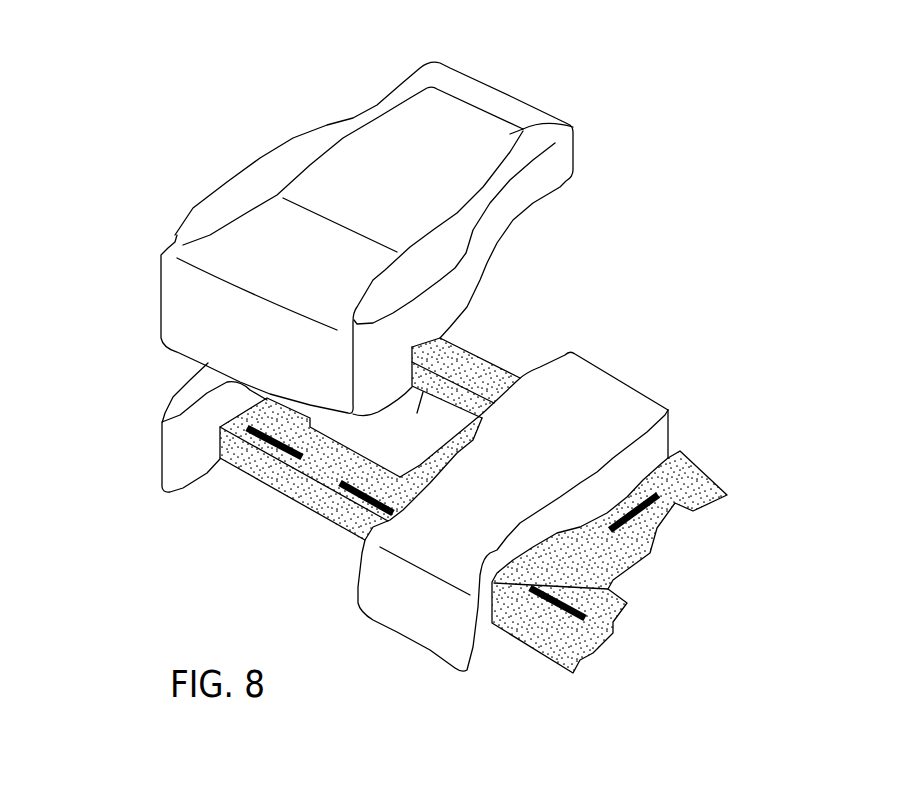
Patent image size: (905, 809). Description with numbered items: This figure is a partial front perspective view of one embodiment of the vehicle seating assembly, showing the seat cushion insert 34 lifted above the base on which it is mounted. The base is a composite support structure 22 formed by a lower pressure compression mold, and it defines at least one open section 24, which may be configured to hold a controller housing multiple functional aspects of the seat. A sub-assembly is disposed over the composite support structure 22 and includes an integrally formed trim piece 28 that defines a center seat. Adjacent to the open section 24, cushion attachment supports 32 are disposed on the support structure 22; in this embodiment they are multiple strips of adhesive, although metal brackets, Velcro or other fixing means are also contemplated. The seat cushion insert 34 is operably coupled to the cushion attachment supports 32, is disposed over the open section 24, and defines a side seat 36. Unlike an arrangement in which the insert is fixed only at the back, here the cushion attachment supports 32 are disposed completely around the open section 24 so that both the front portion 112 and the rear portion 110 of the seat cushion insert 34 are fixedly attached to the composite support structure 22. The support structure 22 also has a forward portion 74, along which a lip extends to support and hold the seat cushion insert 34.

The composite support structure 22 is at (290, 493).
The open section 24 is at (467, 350).
The trim piece 28 is at (632, 410).
The cushion attachment support 32 is at (267, 440).
The seat cushion insert 34 is at (574, 103).
The side seat 36 is at (333, 192).
The forward portion 74 is at (250, 478).
The rear portion 110 is at (572, 128).
The front portion 112 is at (240, 264).